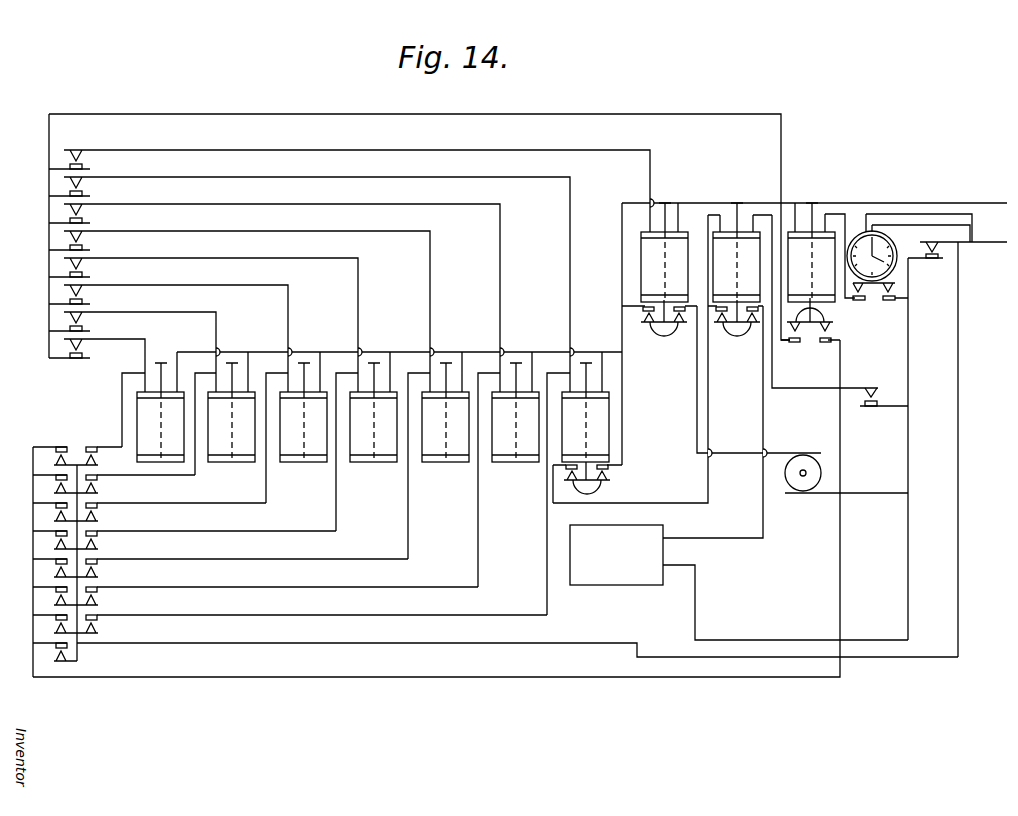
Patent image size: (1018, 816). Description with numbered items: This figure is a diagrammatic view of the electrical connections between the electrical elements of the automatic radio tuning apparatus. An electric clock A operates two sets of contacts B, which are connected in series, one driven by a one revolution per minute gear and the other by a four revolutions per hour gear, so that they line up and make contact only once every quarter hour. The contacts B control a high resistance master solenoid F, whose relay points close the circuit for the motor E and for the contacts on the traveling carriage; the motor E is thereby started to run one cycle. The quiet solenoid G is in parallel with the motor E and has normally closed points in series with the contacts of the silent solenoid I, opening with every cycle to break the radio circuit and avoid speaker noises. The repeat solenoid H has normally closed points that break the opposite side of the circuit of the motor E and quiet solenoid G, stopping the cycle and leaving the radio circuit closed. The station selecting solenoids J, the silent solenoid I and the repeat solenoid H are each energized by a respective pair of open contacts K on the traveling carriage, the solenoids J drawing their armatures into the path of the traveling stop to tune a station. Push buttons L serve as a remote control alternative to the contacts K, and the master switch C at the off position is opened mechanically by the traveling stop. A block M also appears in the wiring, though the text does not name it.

The open contacts K is at (60, 268).
The push buttons L is at (44, 573).
The station selecting solenoids J is at (330, 469).
The silent solenoid I is at (594, 483).
The repeat solenoid H is at (659, 284).
The quiet solenoid G is at (740, 288).
The master solenoid F is at (810, 288).
The motor E is at (803, 490).
The motor M is at (640, 582).
The electric clock A is at (866, 230).
The clock contacts B is at (878, 300).
The master switch C is at (936, 256).